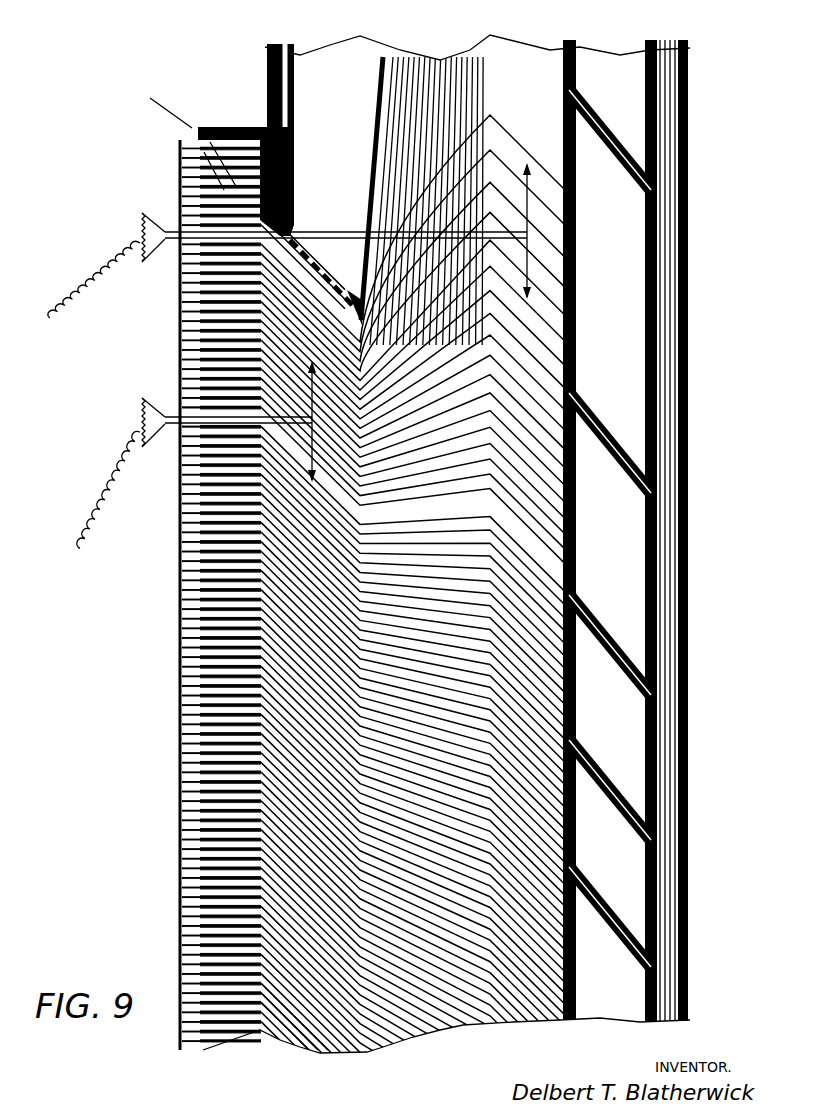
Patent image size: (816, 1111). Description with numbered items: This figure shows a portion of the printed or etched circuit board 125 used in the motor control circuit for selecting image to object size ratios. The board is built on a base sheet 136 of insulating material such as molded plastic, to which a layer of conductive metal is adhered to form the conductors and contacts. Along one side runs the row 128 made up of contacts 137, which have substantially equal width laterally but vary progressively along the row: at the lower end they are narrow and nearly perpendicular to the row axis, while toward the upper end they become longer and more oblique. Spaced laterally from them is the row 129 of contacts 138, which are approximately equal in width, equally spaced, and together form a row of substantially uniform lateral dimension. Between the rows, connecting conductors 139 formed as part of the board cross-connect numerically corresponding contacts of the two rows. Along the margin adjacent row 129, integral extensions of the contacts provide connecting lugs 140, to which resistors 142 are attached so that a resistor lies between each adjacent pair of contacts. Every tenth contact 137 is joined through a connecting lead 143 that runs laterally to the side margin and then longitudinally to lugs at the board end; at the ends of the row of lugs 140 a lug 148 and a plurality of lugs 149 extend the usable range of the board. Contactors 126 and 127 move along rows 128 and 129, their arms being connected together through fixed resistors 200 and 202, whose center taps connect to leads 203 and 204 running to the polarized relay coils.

The printed or etched circuit board 125 is at (690, 436).
The contactor 126 is at (357, 232).
The contactor 127 is at (193, 418).
The row of contacts 128 is at (505, 125).
The row of contacts 129 is at (308, 262).
The base sheet 136 is at (690, 894).
The contacts 137 is at (540, 995).
The contacts 138 is at (312, 1040).
The connecting conductors 139 is at (408, 1040).
The connecting lugs 140 is at (200, 312).
The resistors 142 is at (185, 612).
The connecting leads 143 is at (655, 968).
The lug 148 is at (240, 126).
The lugs 149 is at (198, 128).
The fixed resistor 200 is at (140, 233).
The fixed resistor 202 is at (138, 417).
The lead 203 is at (110, 262).
The lead 204 is at (110, 458).